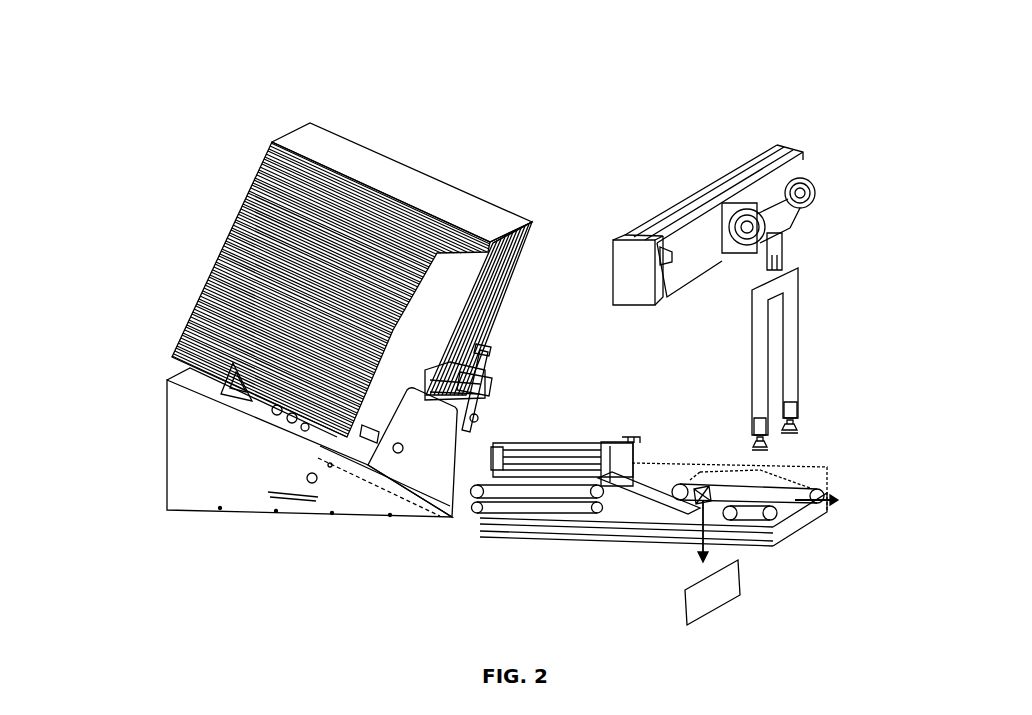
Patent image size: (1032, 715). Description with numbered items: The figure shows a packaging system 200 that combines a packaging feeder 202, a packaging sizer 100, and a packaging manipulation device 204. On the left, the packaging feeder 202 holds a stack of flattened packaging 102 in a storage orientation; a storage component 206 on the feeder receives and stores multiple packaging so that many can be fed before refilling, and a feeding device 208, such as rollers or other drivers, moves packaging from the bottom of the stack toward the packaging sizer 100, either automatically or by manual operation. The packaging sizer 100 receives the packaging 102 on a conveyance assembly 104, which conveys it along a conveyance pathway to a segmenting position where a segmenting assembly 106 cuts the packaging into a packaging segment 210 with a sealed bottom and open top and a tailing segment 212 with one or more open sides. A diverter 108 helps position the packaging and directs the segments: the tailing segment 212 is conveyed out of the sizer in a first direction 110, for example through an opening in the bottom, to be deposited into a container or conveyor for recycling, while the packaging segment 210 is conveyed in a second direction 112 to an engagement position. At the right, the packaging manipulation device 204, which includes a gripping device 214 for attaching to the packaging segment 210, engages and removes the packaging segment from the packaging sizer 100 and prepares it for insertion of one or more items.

The packaging sizer 100 is at (848, 480).
The packaging 102 is at (240, 211).
The conveyance assembly 104 is at (480, 512).
The segmenting assembly 106 is at (621, 446).
The diverter 108 is at (700, 497).
The first direction 110 is at (697, 543).
The second direction 112 is at (821, 520).
The packaging system 200 is at (75, 62).
The packaging feeder 202 is at (139, 340).
The packaging manipulation device 204 is at (848, 185).
The storage component 206 is at (532, 242).
The feeding device 208 is at (476, 403).
The packaging segment 210 is at (765, 491).
The tailing segment 212 is at (683, 608).
The gripping device 214 is at (795, 428).